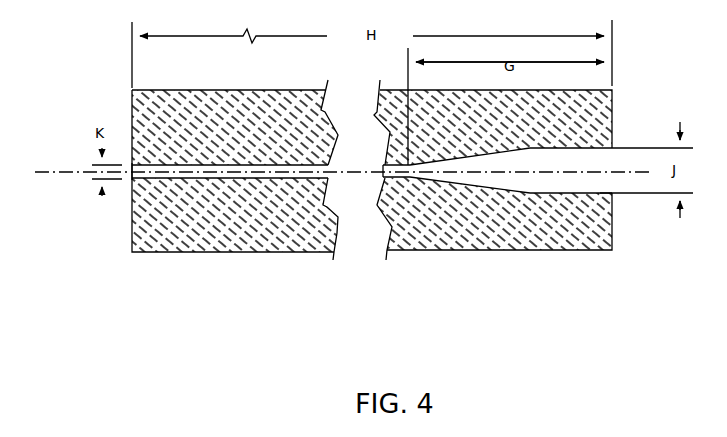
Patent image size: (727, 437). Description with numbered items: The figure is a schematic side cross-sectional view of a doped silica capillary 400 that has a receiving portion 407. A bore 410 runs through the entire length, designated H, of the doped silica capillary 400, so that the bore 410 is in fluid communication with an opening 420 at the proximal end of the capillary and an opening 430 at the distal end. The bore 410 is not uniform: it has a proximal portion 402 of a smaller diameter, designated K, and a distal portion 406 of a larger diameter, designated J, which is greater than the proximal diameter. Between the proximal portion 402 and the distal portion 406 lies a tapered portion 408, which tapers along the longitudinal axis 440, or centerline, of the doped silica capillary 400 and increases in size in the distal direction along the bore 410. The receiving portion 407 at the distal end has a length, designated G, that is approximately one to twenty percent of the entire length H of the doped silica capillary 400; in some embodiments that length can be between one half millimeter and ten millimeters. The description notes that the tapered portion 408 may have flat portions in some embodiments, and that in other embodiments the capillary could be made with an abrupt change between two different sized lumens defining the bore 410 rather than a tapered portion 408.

The doped silica capillary 400 is at (340, 219).
The proximal portion 402 is at (278, 180).
The distal portion 406 is at (516, 186).
The receiving portion 407 is at (487, 213).
The tapered portion 408 is at (437, 186).
The bore 410 is at (152, 164).
The opening 420 is at (130, 180).
The opening 430 is at (618, 190).
The longitudinal axis 440 is at (60, 176).